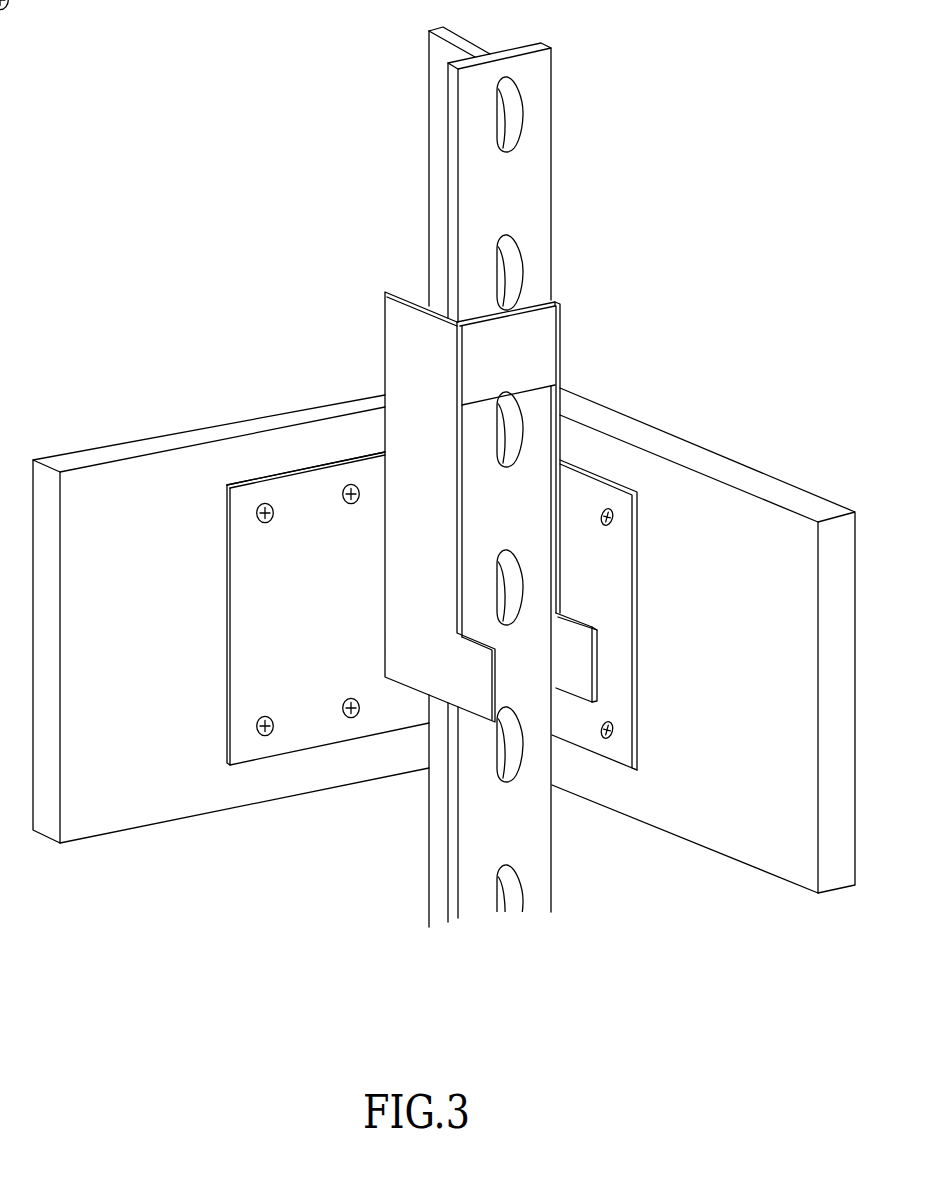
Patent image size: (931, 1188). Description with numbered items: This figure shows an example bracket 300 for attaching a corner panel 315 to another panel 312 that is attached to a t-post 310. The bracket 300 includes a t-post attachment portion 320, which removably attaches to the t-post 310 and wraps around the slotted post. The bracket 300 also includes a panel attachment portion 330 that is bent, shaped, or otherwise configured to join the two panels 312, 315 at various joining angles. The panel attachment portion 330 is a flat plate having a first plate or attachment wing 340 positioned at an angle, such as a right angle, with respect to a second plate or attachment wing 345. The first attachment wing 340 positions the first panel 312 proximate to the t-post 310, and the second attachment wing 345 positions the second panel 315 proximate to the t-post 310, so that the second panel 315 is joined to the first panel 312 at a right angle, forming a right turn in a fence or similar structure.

The bracket 300 is at (158, 206).
The t-post 310 is at (528, 197).
The panel 312 is at (178, 440).
The corner panel 315 is at (735, 476).
The t-post attachment portion 320 is at (537, 347).
The panel attachment portion 330 is at (335, 458).
The first attachment wing 340 is at (313, 718).
The second attachment wing 345 is at (580, 722).